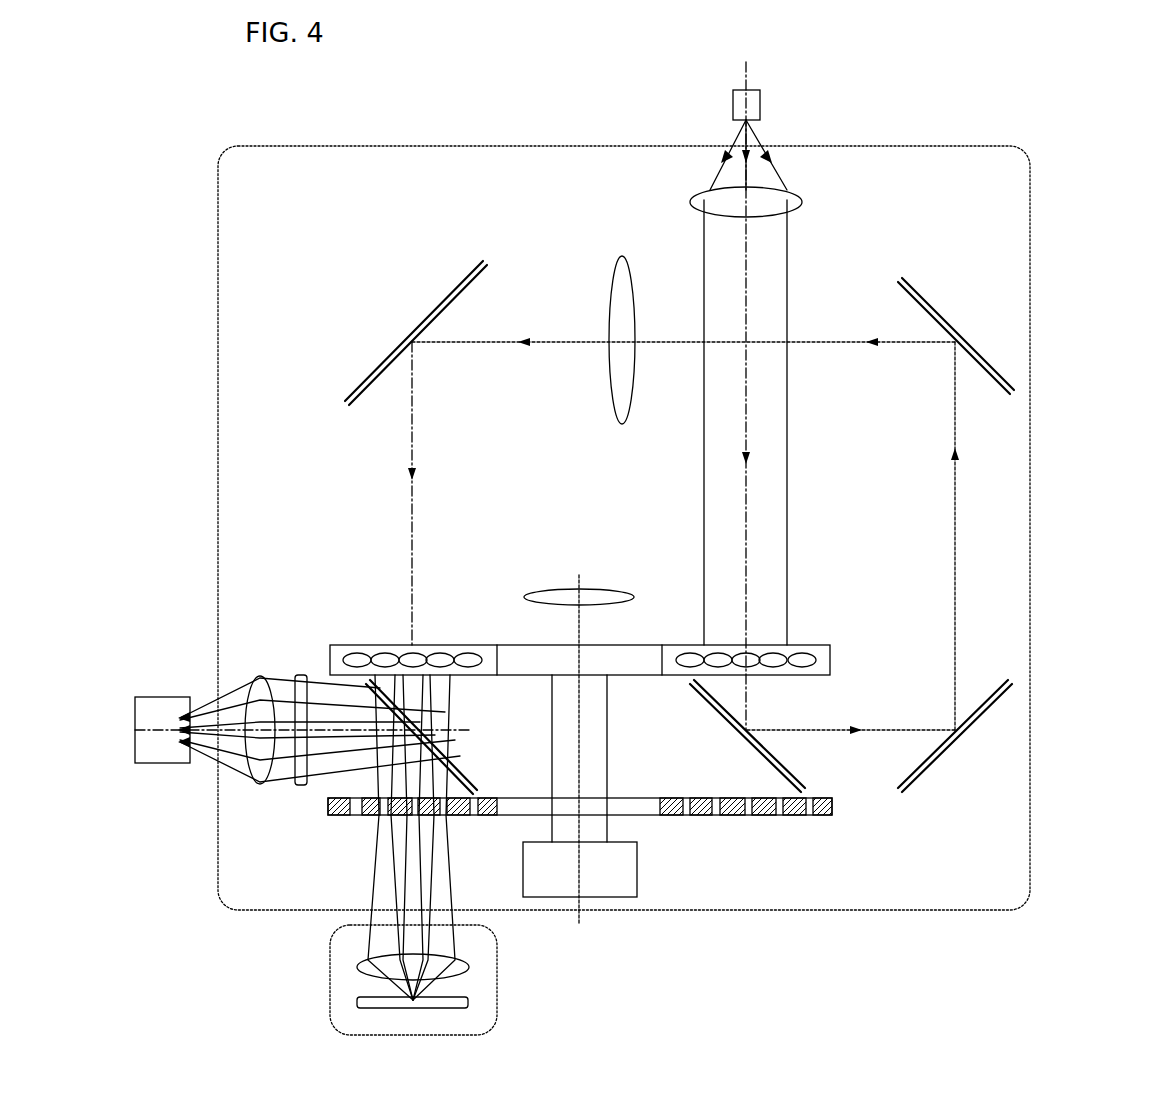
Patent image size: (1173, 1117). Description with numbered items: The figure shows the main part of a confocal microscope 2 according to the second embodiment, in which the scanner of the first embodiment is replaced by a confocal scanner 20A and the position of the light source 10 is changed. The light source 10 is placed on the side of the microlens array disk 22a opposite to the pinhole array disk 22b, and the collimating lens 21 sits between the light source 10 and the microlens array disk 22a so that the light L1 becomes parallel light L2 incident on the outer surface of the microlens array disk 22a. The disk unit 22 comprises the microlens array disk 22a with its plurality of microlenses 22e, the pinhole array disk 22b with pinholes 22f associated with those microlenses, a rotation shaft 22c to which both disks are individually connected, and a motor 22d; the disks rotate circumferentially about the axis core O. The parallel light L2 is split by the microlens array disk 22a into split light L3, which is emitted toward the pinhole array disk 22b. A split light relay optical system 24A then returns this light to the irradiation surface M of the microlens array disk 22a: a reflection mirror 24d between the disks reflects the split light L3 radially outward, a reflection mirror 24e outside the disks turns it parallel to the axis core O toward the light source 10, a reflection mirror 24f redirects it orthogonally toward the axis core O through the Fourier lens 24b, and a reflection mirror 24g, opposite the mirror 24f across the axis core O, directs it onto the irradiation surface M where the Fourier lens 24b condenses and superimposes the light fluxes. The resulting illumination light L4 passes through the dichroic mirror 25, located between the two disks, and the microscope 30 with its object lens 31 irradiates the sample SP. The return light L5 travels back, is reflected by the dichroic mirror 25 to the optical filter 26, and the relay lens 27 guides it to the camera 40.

The confocal microscope 2 is at (895, 128).
The light source 10 is at (760, 100).
The confocal scanner 20A is at (305, 146).
The collimating lens 21 is at (800, 200).
The disk unit 22 is at (653, 638).
The microlens array disk 22a is at (833, 657).
The pinhole array disk 22b is at (835, 808).
The rotation shaft 22c is at (610, 830).
The motor 22d is at (637, 885).
The microlenses 22e is at (413, 645).
The pinholes 22f is at (455, 815).
The split light relay optical system 24A is at (946, 298).
The Fourier lens 24b is at (622, 257).
The reflection mirror 24d is at (712, 700).
The reflection mirror 24e is at (925, 775).
The reflection mirror 24f is at (975, 355).
The reflection mirror 24g is at (380, 358).
The dichroic mirror 25 is at (465, 780).
The optical filter 26 is at (300, 675).
The relay lens 27 is at (258, 676).
The microscope 30 is at (330, 985).
The object lens 31 is at (468, 965).
The camera 40 is at (165, 697).
The light L1 is at (718, 178).
The parallel light L2 is at (790, 455).
The split light L3 is at (826, 730).
The illumination light L4 is at (455, 903).
The return light L5 is at (320, 780).
The irradiation surface M is at (385, 645).
The axis core O is at (604, 590).
The sample SP is at (468, 1003).